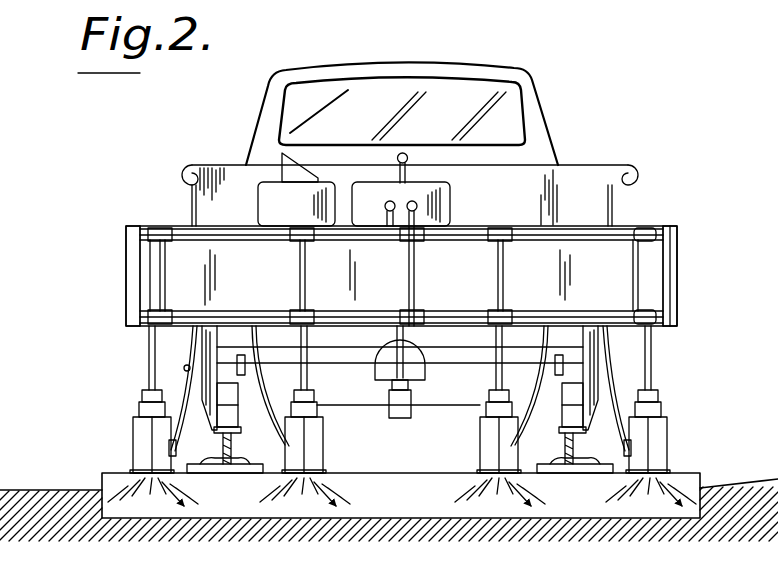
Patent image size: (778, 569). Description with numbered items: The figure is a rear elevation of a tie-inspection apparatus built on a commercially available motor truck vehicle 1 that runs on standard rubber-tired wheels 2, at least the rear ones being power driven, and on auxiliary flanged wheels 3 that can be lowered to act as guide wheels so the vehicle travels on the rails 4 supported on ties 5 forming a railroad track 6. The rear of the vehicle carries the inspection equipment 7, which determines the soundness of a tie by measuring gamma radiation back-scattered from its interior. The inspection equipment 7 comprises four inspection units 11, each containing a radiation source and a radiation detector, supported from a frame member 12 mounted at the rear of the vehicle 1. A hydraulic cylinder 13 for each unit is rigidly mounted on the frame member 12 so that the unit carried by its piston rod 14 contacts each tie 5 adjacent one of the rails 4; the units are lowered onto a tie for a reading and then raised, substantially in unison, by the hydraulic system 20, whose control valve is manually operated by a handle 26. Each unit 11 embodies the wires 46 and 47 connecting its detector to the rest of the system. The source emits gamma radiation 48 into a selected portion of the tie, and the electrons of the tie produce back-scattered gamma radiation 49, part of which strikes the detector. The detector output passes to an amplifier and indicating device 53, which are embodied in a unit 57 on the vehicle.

The motor truck vehicle 1 is at (548, 122).
The rubber-tired wheels 2 is at (207, 412).
The auxiliary flanged wheels 3 is at (228, 383).
The rails 4 is at (221, 450).
The ties 5 is at (405, 486).
The railroad track 6 is at (382, 260).
The inspection equipment 7 is at (132, 418).
The inspection units 11 is at (133, 440).
The frame member 12 is at (126, 278).
The hydraulic cylinder 13 is at (168, 276).
The piston rod 14 is at (148, 382).
The hydraulic system 20 is at (454, 205).
The handle 26 is at (406, 150).
The wires 46 is at (183, 368).
The wires 47 is at (190, 350).
The gamma radiation 48 is at (322, 474).
The back-scattered gamma radiation 49 is at (268, 482).
The indicating device 53 is at (292, 166).
The amplifier and indicator unit 57 is at (256, 202).